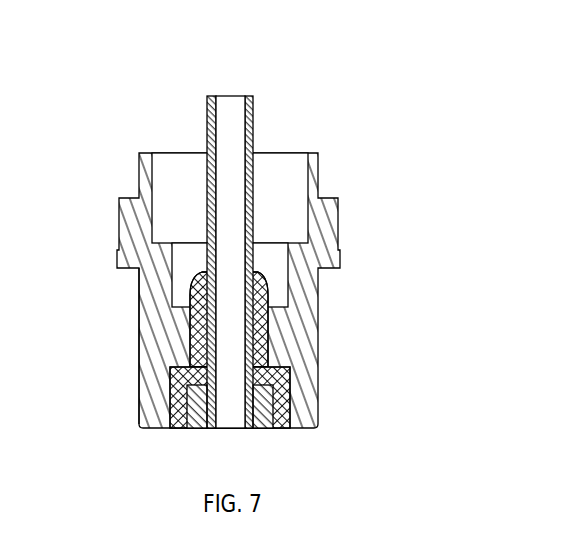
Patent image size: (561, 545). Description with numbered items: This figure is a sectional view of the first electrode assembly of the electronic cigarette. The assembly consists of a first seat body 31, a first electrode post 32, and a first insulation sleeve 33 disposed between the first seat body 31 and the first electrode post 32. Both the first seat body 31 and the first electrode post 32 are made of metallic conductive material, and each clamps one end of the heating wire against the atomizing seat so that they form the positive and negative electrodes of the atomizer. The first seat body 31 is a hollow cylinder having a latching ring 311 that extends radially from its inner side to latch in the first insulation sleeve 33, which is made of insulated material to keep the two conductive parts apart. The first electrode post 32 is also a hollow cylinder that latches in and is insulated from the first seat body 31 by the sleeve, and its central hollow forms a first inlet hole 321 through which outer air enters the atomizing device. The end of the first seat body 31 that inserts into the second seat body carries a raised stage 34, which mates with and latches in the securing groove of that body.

The first seat body 31 is at (300, 307).
The latching ring 311 is at (268, 333).
The first electrode post 32 is at (255, 140).
The first inlet hole 321 is at (228, 138).
The first insulation sleeve 33 is at (290, 382).
The raised stage 34 is at (139, 345).